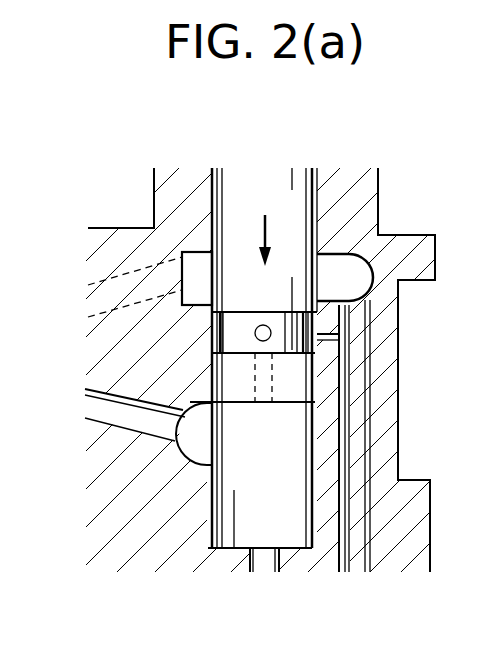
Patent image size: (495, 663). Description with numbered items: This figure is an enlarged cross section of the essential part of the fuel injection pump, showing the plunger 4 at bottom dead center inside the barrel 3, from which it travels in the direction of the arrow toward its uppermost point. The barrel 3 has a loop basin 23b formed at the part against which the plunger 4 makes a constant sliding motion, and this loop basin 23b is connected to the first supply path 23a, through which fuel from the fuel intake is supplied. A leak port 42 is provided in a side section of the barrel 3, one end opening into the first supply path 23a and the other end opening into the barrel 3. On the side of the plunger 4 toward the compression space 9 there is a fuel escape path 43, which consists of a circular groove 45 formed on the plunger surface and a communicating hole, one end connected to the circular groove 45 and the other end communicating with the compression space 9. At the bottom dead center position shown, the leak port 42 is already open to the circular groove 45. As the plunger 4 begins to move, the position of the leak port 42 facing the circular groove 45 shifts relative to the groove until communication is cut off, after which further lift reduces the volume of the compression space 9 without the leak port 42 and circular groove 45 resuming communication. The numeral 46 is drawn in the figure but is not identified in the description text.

The plunger 4 is at (297, 188).
The loop basin 23b is at (355, 272).
The leak port 42 is at (328, 338).
The passage 46 is at (268, 379).
The first supply path 23a is at (371, 403).
The barrel 3 is at (316, 455).
The circular groove 45 is at (213, 330).
The fuel escape path 43 is at (210, 336).
The compression space 9 is at (237, 540).